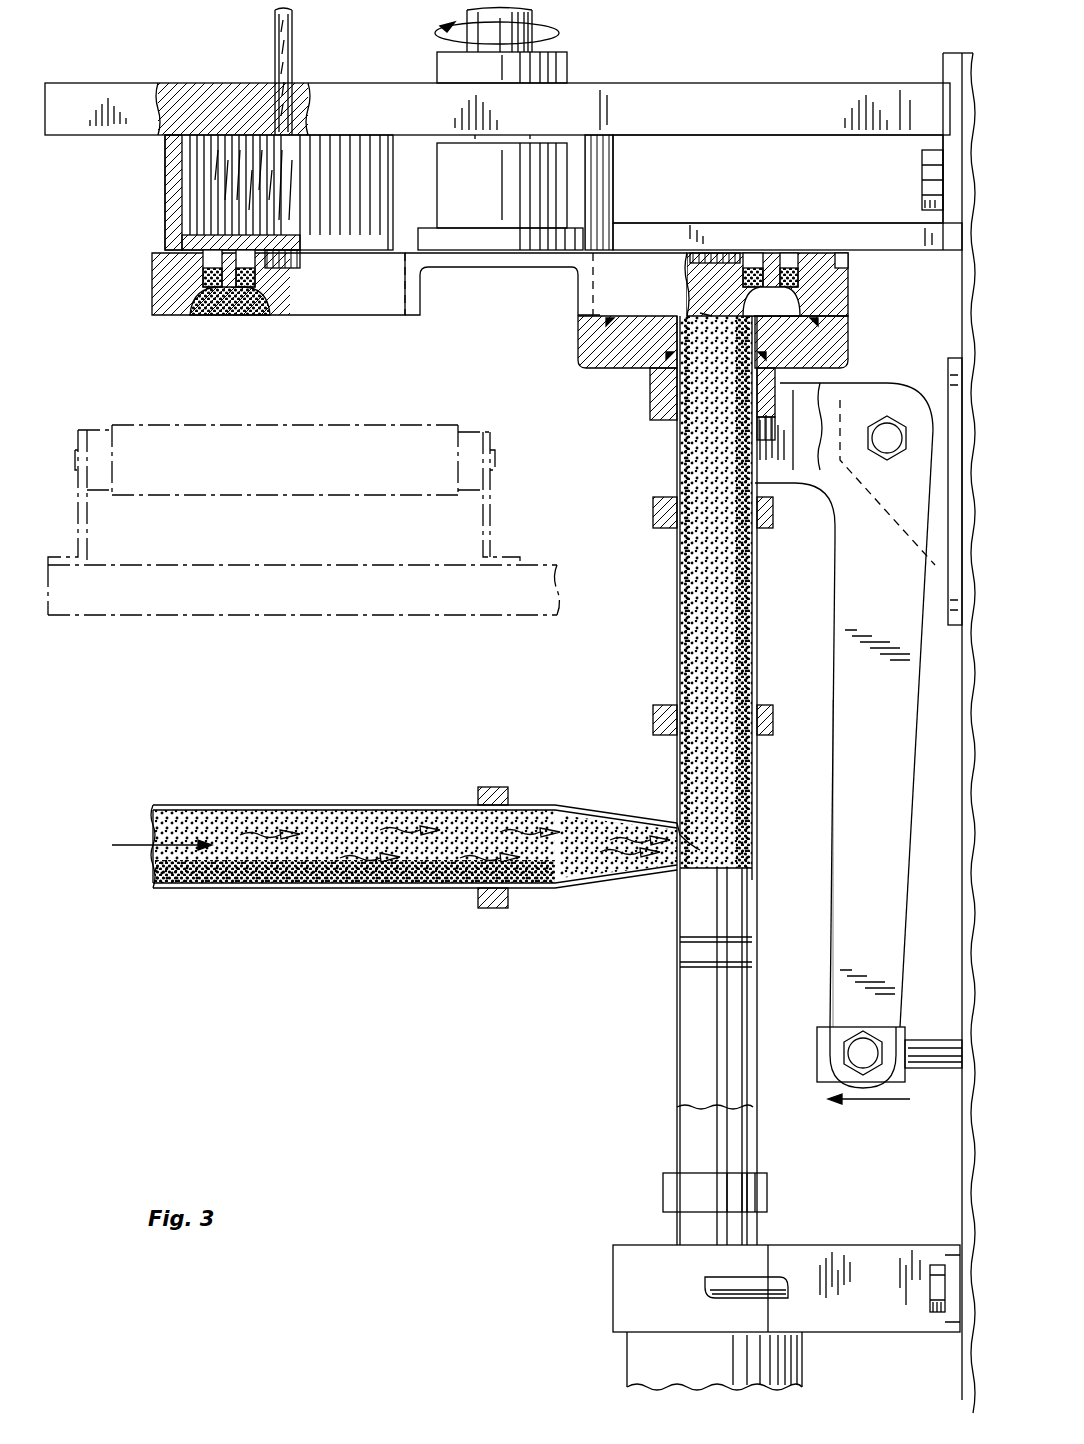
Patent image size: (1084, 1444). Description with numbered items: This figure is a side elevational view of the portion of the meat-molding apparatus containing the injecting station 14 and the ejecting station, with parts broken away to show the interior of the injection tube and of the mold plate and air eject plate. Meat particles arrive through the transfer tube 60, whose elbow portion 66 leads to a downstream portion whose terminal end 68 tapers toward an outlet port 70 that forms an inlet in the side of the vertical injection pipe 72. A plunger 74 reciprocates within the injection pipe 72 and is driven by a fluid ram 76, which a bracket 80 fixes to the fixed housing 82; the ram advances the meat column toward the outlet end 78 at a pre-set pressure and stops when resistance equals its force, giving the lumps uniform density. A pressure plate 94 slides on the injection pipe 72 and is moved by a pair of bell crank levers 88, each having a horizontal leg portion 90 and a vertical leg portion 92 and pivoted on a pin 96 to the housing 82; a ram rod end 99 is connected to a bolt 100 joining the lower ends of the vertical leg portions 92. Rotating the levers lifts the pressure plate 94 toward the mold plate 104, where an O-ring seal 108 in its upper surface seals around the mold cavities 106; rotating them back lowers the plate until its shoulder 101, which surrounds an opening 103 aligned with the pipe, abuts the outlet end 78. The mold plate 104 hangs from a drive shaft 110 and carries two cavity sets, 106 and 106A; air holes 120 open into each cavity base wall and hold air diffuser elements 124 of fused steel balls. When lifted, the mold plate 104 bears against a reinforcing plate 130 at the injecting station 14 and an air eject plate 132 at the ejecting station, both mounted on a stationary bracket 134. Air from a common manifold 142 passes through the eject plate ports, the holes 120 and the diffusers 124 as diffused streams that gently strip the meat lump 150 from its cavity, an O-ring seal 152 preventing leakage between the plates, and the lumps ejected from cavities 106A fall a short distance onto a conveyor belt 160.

The injecting station 14 is at (664, 712).
The transfer tube 60 is at (313, 892).
The elbow portion 66 is at (420, 805).
The terminal end 68 is at (582, 808).
The outlet port 70 is at (680, 822).
The injection pipe 72 is at (675, 470).
The plunger 74 is at (744, 996).
The fluid ram 76 is at (627, 1355).
The outlet end 78 is at (660, 340).
The bracket 80 is at (830, 1245).
The fixed housing 82 is at (962, 1188).
The bell crank levers 88 is at (820, 806).
The horizontal leg portion 90 is at (840, 390).
The vertical leg portion 92 is at (830, 890).
The pressure plate 94 is at (848, 333).
The pin 96 is at (890, 455).
The rod end 99 is at (938, 1070).
The bolt 100 is at (882, 1038).
The shoulder 101 is at (745, 312).
The opening 103 is at (700, 313).
The mold plate 104 is at (570, 292).
The mold cavities 106 is at (793, 300).
The mold cavities 106A is at (205, 318).
The O-ring seal 108 is at (602, 322).
The drive shaft 110 is at (540, 22).
The air holes 120 is at (752, 268).
The air diffuser element 124 is at (790, 268).
The reinforcing plate 130 is at (738, 150).
The air eject plate 132 is at (165, 200).
The stationary bracket 134 is at (663, 83).
The common manifold 142 is at (200, 166).
The meat lump 150 is at (252, 318).
The O-ring seal 152 is at (160, 239).
The conveyor belt 160 is at (360, 412).